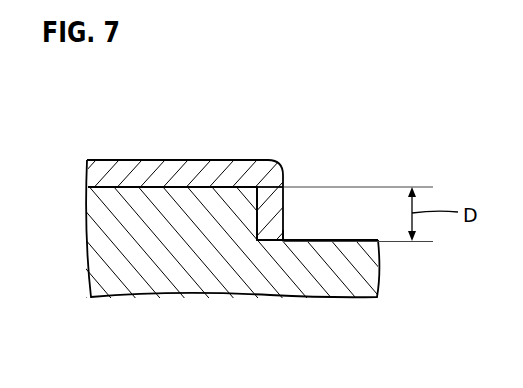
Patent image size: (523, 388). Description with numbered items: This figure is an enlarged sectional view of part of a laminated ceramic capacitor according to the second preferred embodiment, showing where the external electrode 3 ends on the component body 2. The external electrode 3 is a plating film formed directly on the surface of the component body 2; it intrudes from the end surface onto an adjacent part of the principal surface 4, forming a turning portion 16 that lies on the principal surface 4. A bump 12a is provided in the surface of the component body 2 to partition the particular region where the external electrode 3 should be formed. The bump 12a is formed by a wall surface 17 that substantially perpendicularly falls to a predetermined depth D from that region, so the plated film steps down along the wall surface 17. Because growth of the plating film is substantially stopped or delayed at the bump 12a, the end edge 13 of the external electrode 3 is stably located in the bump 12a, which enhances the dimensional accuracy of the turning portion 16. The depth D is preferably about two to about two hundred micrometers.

The component body 2 is at (189, 295).
The external electrode 3 is at (88, 160).
The principal surface 4 is at (361, 240).
The bump 12a is at (259, 187).
The end edge of the external electrode 13 is at (290, 240).
The turning portion 16 is at (164, 162).
The wall surface 17 is at (258, 202).